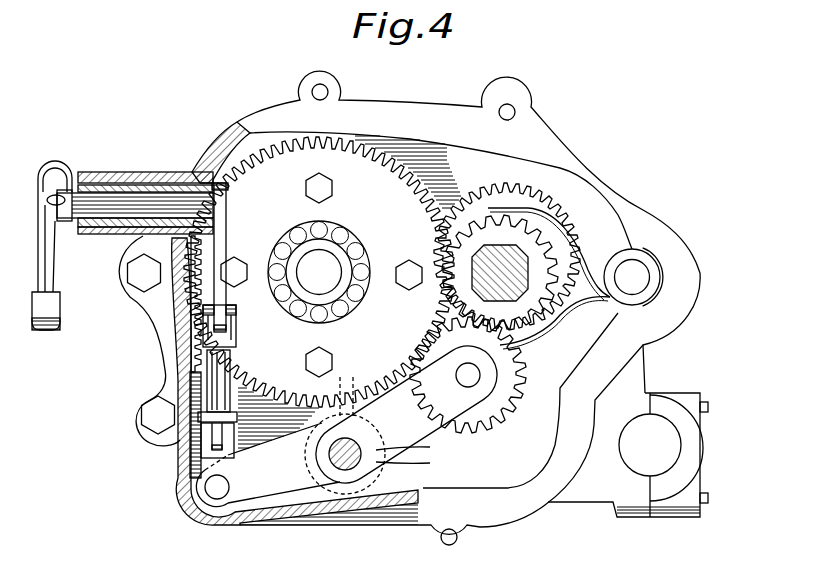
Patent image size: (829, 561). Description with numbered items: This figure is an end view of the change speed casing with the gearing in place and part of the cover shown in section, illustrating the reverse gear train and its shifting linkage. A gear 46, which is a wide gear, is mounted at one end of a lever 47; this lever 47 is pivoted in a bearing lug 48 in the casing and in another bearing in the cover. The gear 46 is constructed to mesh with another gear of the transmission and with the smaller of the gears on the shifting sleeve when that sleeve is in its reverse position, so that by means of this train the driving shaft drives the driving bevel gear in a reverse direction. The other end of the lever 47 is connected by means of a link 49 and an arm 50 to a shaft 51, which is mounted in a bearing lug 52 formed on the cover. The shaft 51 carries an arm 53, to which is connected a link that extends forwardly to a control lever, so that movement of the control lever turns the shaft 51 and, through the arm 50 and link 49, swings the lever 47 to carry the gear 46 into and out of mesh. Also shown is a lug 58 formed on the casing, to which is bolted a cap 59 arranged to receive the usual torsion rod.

The gear 46 is at (488, 422).
The lever 47 is at (428, 427).
The bearing lug 48 is at (332, 457).
The link 49 is at (232, 375).
The arm 50 is at (218, 221).
The shaft 51 is at (113, 200).
The bearing lug 52 is at (157, 173).
The arm 53 is at (52, 258).
The lug 58 is at (598, 496).
The cap 59 is at (685, 397).